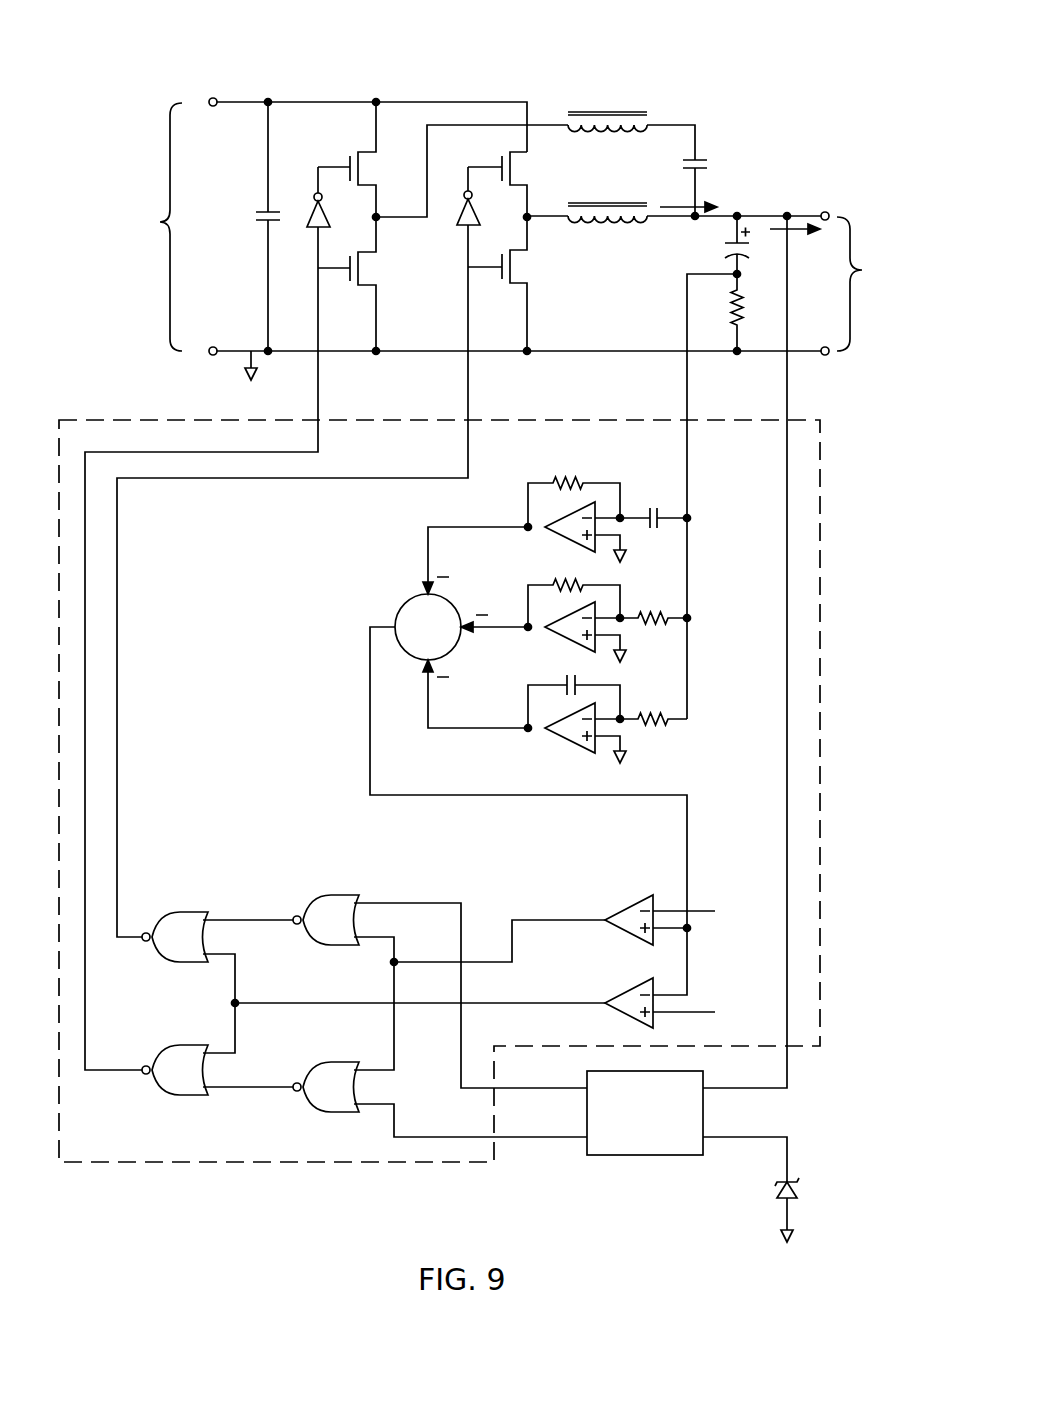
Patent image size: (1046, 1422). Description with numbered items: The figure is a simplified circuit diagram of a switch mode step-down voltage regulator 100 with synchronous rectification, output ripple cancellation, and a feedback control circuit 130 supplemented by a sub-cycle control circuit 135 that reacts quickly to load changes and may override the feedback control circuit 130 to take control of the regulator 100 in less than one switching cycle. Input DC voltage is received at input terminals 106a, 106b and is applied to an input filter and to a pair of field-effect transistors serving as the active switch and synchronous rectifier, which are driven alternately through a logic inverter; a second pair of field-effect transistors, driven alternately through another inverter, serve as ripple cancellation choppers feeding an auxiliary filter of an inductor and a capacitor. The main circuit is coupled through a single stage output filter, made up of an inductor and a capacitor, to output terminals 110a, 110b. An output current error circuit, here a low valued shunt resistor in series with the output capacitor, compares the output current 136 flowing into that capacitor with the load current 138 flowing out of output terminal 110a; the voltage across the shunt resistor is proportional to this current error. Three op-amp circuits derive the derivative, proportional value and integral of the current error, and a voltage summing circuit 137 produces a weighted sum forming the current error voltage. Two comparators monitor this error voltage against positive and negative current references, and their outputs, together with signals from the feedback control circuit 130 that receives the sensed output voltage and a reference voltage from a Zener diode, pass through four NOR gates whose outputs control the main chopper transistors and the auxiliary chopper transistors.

The voltage regulator 100 is at (186, 31).
The input terminal 106a is at (210, 98).
The input terminal 106b is at (210, 356).
The output terminal 110a is at (826, 210).
The output terminal 110b is at (826, 357).
The feedback control circuit 130 is at (607, 1156).
The sub-cycle control circuit 135 is at (822, 945).
The output current 136 is at (720, 205).
The voltage summing circuit 137 is at (397, 589).
The load current 138 is at (793, 236).